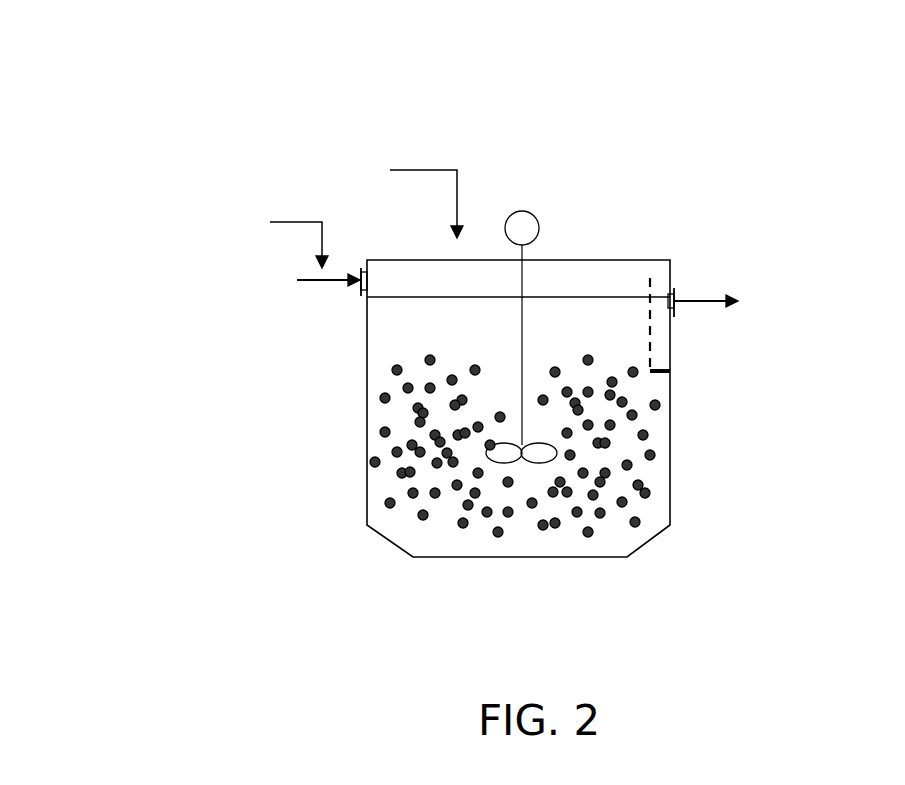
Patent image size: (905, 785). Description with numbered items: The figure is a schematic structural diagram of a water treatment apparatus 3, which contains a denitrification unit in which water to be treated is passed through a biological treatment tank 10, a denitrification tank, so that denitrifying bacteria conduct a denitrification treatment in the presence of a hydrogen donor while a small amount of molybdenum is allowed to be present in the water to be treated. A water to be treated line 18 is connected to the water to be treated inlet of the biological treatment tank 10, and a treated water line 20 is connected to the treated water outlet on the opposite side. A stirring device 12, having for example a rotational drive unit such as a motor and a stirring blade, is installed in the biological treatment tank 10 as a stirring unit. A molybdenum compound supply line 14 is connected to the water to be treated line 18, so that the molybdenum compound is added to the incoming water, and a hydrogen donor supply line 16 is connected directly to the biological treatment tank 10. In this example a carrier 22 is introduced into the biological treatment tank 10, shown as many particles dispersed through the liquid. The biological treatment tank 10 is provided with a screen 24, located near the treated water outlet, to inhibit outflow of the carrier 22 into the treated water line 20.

The water treatment apparatus 3 is at (542, 104).
The biological treatment tank 10 is at (572, 559).
The stirring device 12 is at (539, 221).
The molybdenum compound supply line 14 is at (322, 240).
The hydrogen donor supply line 16 is at (457, 202).
The water to be treated line 18 is at (330, 284).
The treated water line 20 is at (702, 304).
The carrier 22 is at (638, 526).
The screen 24 is at (671, 376).